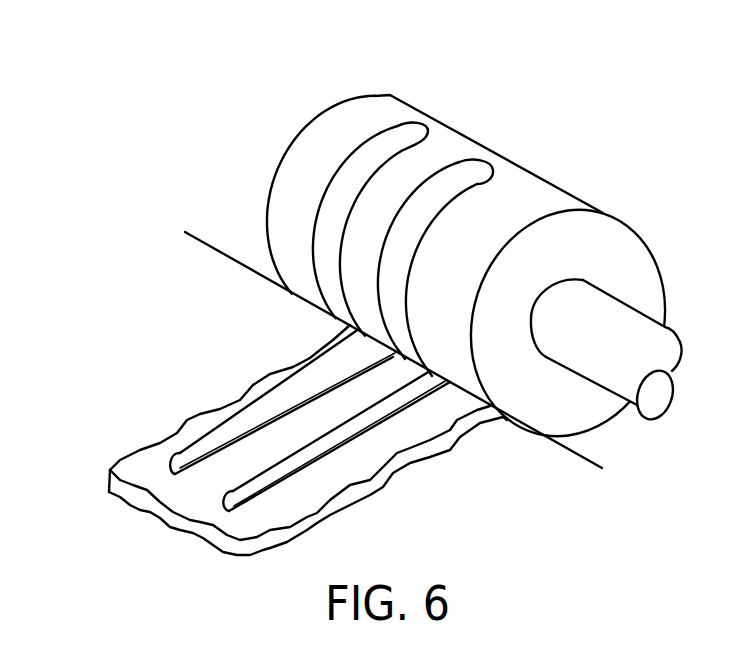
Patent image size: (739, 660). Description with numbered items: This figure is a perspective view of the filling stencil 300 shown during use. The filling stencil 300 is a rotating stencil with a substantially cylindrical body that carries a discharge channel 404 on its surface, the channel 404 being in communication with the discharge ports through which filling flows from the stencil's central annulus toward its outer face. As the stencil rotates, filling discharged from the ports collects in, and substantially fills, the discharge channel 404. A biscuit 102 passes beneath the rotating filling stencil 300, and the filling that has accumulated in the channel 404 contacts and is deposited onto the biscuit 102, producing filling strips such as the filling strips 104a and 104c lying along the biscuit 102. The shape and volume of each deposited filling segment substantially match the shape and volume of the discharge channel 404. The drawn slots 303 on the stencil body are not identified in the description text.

The filling stencil 300 is at (453, 240).
The slot 303 is at (407, 133).
The discharge channel 404 is at (322, 195).
The biscuit 102 is at (197, 507).
The filling strip 104a is at (220, 445).
The filling strip 104c is at (273, 480).